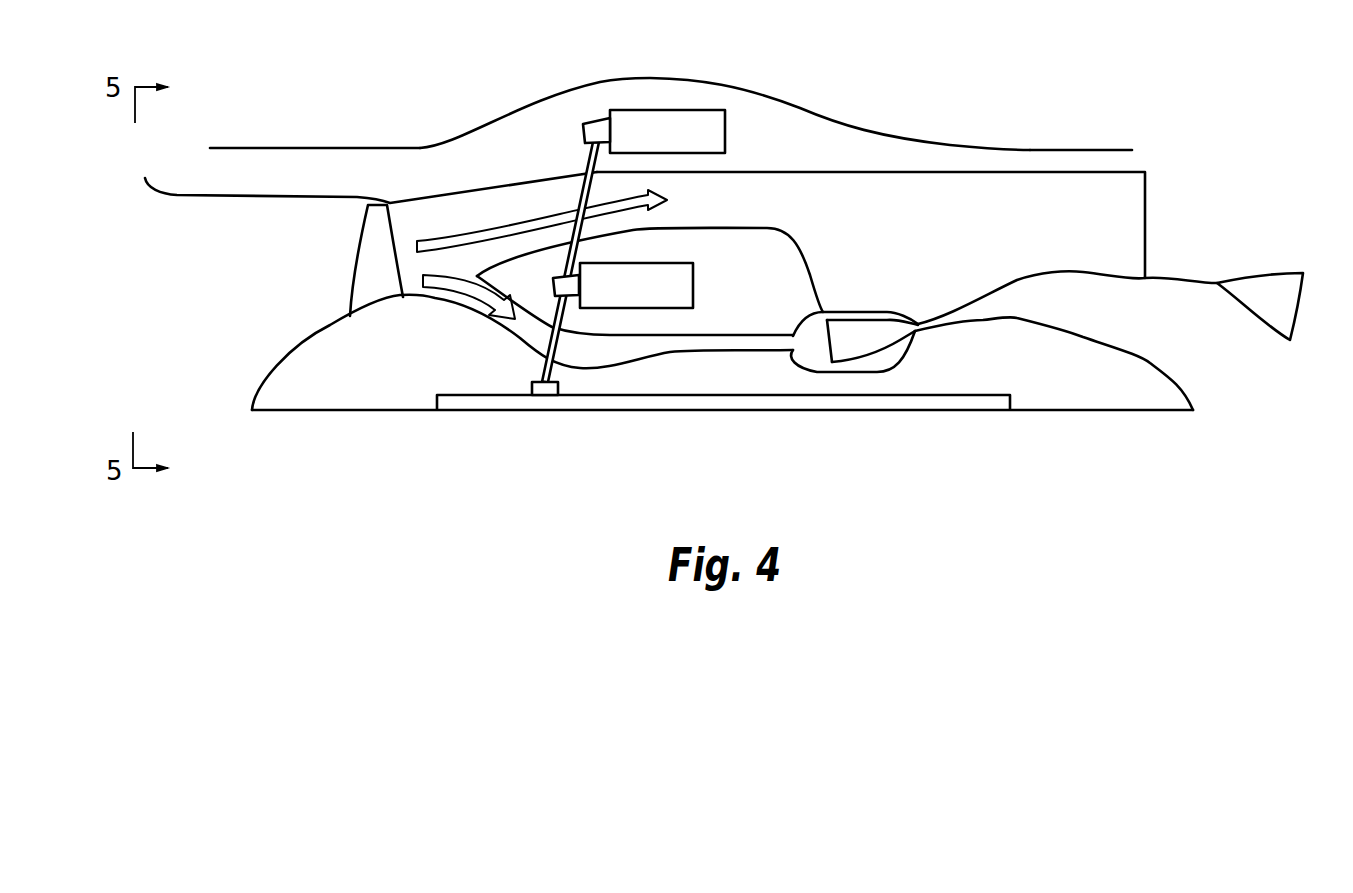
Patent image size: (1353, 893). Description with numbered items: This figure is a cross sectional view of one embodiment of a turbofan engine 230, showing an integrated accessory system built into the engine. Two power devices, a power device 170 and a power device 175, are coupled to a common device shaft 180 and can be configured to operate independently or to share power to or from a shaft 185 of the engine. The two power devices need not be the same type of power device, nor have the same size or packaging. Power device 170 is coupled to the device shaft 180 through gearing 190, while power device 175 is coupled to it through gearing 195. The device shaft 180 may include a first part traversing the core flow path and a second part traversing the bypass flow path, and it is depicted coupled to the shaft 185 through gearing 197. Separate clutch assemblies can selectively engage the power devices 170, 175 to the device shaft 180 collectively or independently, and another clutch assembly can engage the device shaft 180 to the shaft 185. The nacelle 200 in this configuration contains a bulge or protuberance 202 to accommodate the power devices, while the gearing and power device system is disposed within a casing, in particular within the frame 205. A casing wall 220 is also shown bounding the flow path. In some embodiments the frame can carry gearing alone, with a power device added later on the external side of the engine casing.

The power device 170 is at (613, 293).
The power device 175 is at (650, 127).
The device shaft 180 is at (577, 182).
The shaft 185 is at (677, 410).
The gearing 190 is at (553, 287).
The gearing 195 is at (595, 118).
The gearing 197 is at (532, 386).
The nacelle 200 is at (1028, 150).
The bulge or protuberance 202 is at (743, 88).
The frame 205 is at (767, 300).
The fan duct wall 220 is at (835, 172).
The turbofan engine 230 is at (881, 437).